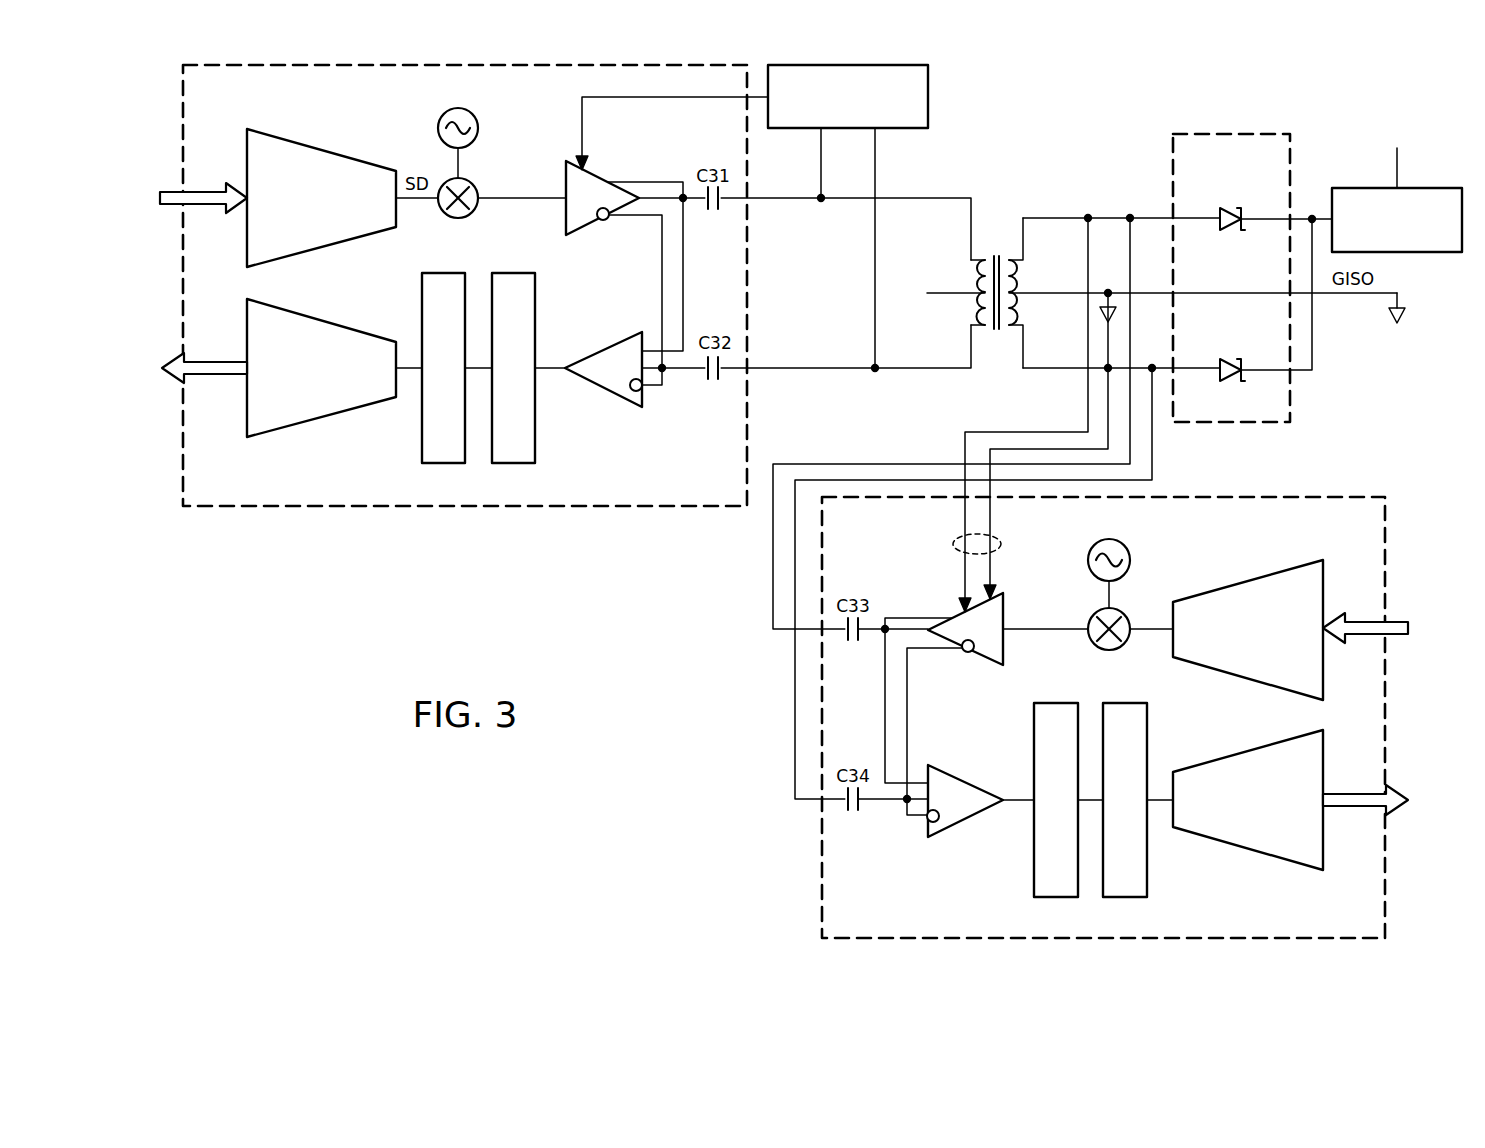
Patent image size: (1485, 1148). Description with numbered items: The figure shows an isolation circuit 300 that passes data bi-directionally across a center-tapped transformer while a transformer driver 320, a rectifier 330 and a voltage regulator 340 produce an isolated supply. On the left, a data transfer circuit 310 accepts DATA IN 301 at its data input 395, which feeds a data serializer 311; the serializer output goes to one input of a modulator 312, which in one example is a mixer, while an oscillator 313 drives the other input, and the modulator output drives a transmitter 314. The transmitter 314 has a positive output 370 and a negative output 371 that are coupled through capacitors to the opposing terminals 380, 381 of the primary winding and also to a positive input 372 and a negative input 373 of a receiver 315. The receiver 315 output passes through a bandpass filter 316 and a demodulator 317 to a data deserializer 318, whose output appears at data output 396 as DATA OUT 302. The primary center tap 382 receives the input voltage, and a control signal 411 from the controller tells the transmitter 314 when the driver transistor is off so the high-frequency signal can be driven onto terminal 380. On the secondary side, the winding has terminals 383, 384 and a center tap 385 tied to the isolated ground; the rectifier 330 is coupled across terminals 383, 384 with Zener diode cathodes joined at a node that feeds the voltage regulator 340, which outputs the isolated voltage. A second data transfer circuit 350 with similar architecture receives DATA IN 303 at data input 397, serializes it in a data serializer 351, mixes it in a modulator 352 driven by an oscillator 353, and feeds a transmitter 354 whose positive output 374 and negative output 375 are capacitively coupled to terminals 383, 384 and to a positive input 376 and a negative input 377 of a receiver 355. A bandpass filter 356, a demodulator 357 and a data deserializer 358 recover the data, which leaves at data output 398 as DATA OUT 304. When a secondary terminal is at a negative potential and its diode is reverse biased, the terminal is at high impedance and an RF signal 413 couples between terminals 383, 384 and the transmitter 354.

The isolation circuit 300 is at (555, 629).
The DATA IN 301 is at (130, 173).
The DATA OUT 302 is at (130, 341).
The DATA IN 303 is at (1440, 660).
The DATA OUT 304 is at (1440, 830).
The data transfer circuit 310 is at (388, 511).
The data serializer 311 is at (323, 150).
The modulator 312 is at (446, 215).
The oscillator 313 is at (440, 117).
The transmitter 314 is at (566, 205).
The receiver 315 is at (603, 347).
The bandpass filter 316 is at (536, 415).
The demodulator 317 is at (421, 415).
The data deserializer 318 is at (320, 319).
The transformer driver 320 is at (928, 86).
The rectifier 330 is at (1259, 130).
The voltage regulator 340 is at (1440, 188).
The data transfer circuit 350 is at (1210, 492).
The data serializer 351 is at (1245, 576).
The modulator 352 is at (1125, 648).
The oscillator 353 is at (1128, 546).
The transmitter 354 is at (1010, 645).
The receiver 355 is at (970, 785).
The bandpass filter 356 is at (1034, 848).
The demodulator 357 is at (1147, 848).
The data deserializer 358 is at (1245, 746).
The positive output 370 is at (613, 183).
The negative output 371 is at (609, 220).
The positive input 372 is at (652, 352).
The negative input 373 is at (647, 390).
The positive output 374 is at (940, 613).
The negative output 375 is at (957, 652).
The positive input 376 is at (918, 783).
The negative input 377 is at (918, 828).
The terminal 380 is at (971, 251).
The terminal 381 is at (964, 371).
The center tap 382 is at (950, 297).
The terminal 383 is at (1030, 217).
The terminal 384 is at (1030, 371).
The center tap 385 is at (1042, 297).
The data input 395 is at (222, 190).
The data output 396 is at (225, 360).
The data input 397 is at (1360, 620).
The data output 398 is at (1340, 794).
The control signal 411 is at (582, 116).
The RF signal 413 is at (1001, 545).